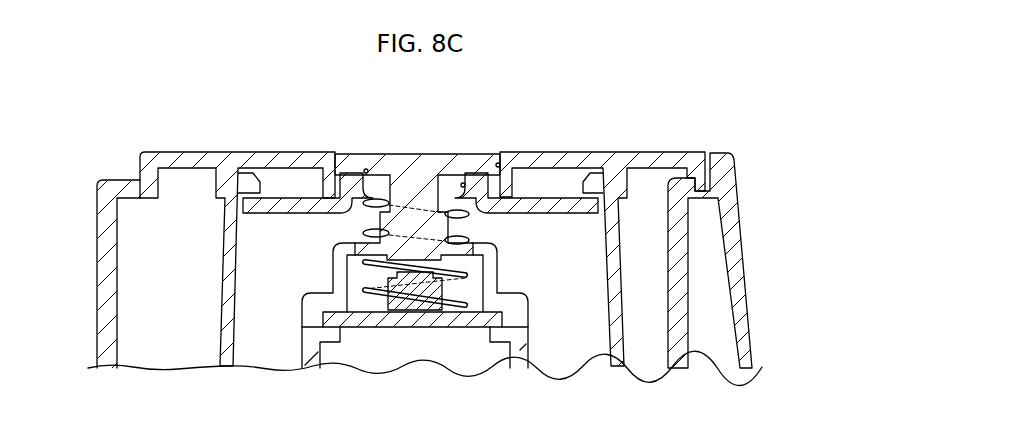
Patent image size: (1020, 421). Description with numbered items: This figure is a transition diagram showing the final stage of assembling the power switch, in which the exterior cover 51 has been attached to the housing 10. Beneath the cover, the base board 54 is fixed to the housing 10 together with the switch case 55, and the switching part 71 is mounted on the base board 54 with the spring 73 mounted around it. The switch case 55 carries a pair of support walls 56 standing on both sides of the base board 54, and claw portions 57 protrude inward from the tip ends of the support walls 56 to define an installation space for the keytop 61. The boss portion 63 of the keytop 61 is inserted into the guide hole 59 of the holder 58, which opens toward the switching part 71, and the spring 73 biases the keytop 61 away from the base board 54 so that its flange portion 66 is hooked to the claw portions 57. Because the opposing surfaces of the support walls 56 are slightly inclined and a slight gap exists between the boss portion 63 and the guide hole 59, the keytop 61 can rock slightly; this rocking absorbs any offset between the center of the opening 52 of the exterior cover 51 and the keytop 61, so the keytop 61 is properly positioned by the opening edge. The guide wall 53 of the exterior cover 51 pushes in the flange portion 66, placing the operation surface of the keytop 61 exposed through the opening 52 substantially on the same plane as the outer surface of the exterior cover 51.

The housing 10 is at (743, 210).
The exterior cover 51 is at (662, 152).
The opening 52 is at (494, 153).
The guide wall 53 is at (318, 167).
The base board 54 is at (478, 312).
The switch case 55 is at (218, 292).
The support walls 56 is at (224, 222).
The claw portions 57 is at (255, 172).
The holder 58 is at (462, 238).
The guide hole 59 is at (440, 176).
The keytop 61 is at (413, 149).
The boss portion 63 is at (366, 224).
The flange portion 66 is at (289, 197).
The switching part 71 is at (441, 286).
The spring 73 is at (364, 290).